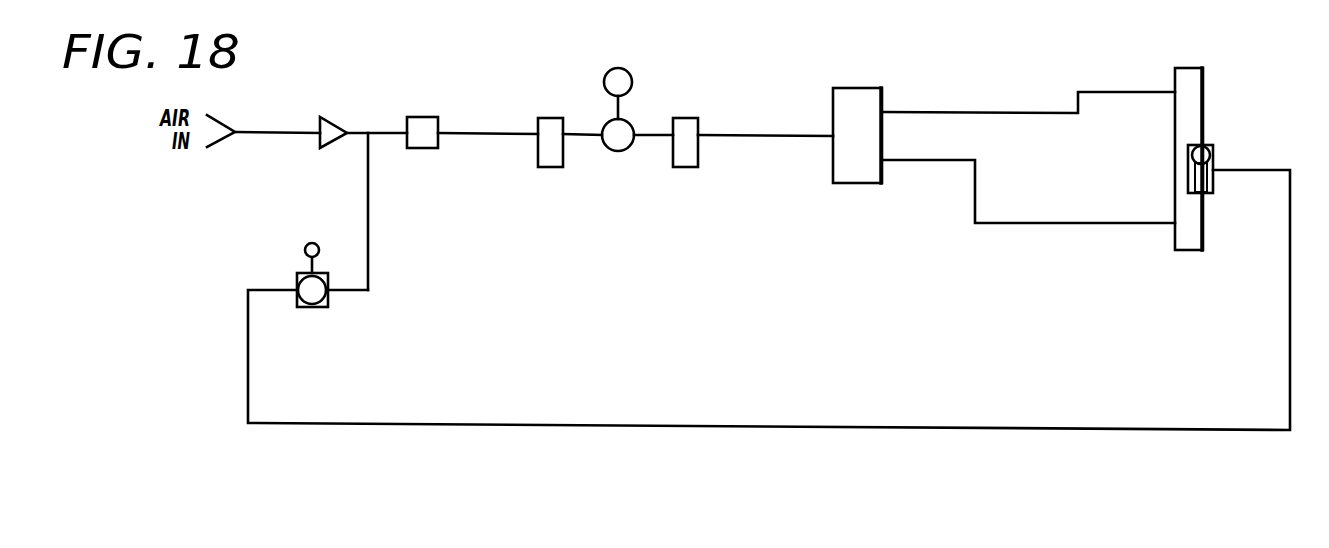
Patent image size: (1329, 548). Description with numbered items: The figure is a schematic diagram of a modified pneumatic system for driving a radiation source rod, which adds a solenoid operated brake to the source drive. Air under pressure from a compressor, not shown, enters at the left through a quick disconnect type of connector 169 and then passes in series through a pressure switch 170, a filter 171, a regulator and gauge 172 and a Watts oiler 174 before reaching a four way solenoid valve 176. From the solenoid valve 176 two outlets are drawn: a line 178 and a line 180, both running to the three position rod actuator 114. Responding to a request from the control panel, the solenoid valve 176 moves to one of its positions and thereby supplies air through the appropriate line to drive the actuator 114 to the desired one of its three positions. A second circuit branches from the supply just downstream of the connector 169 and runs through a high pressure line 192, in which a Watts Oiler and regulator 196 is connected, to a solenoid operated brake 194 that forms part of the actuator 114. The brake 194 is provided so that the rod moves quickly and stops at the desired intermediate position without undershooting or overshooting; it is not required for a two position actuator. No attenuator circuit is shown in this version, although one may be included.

The three position rod actuator 114 is at (1226, 159).
The quick disconnect type of connector 169 is at (360, 110).
The pressure switch 170 is at (451, 110).
The filter 171 is at (524, 164).
The regulator and gauge 172 is at (584, 109).
The Watts oiler 174 is at (656, 164).
The four way solenoid valve 176 is at (840, 163).
The line 178 is at (1028, 91).
The line 180 is at (1028, 216).
The high pressure line 192 is at (769, 300).
The solenoid operated brake 194 is at (1239, 163).
The Watts Oiler and regulator 196 is at (337, 298).